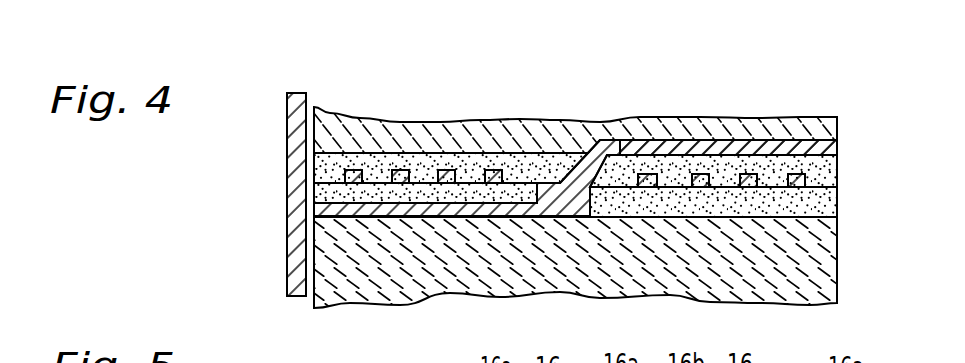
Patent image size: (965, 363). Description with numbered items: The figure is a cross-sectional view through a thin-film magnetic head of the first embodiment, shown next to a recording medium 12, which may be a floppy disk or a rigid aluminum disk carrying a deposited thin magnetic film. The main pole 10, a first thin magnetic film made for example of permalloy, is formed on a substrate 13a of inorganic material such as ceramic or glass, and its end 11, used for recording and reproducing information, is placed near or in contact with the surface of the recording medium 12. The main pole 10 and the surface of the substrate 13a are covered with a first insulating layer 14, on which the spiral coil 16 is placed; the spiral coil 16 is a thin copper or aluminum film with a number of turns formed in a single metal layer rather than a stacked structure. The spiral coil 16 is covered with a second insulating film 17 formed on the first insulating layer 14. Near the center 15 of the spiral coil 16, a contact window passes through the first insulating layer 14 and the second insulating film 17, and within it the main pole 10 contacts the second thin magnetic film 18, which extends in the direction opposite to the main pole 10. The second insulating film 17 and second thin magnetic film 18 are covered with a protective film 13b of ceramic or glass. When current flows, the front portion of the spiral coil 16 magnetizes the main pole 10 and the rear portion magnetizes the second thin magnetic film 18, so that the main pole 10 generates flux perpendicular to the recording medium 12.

The main pole 10 is at (418, 214).
The end of main pole 11 is at (317, 210).
The recording medium 12 is at (287, 253).
The substrate 13a is at (830, 266).
The protective film 13b is at (327, 124).
The first insulating layer 14 is at (490, 193).
The center of spiral coil 15 is at (577, 212).
The spiral coil 16 is at (357, 170).
The second insulating film 17 is at (557, 167).
The second thin magnetic film 18 is at (838, 145).